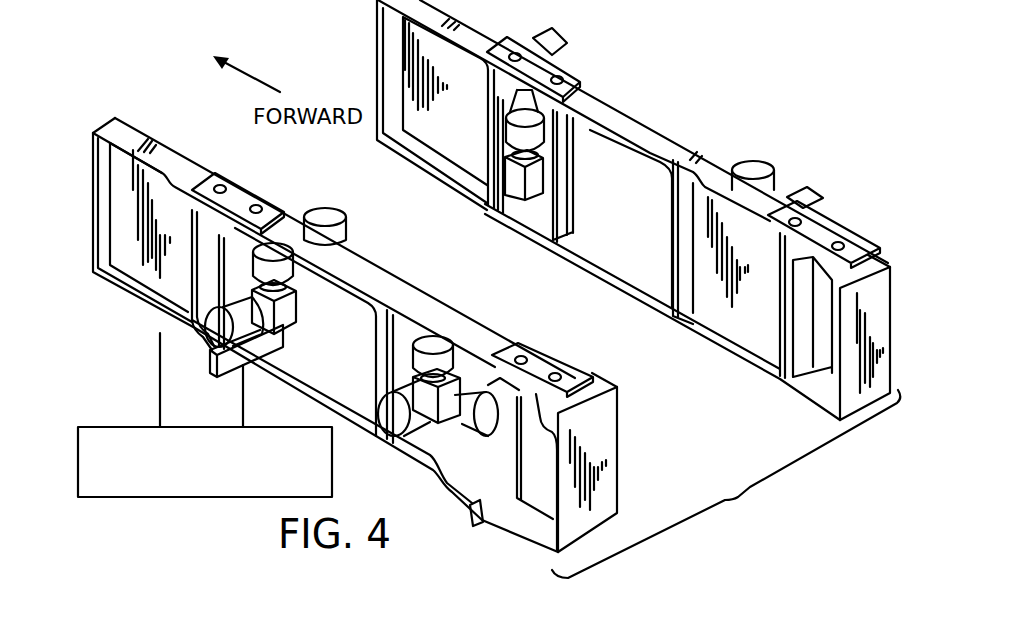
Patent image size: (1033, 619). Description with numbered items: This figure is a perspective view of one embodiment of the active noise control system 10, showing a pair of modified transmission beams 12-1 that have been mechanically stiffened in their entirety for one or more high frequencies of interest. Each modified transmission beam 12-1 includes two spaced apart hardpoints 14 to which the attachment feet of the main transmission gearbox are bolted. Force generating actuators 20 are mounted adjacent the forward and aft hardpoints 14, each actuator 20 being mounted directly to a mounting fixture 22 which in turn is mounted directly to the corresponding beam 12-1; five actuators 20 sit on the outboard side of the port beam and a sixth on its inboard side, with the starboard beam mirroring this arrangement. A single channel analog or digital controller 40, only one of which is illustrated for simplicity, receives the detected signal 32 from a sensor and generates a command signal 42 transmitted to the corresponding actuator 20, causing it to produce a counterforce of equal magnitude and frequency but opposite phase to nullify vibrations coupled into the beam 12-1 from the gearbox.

The active noise control (ANC) system 10 is at (140, 84).
The modified transmission beam 12-1 is at (392, 284).
The hardpoint 14 is at (245, 196).
The force generating actuator 20 is at (281, 247).
The mounting fixture 22 is at (292, 308).
The detected signal 32 is at (245, 401).
The single channel controller 40 is at (115, 427).
The command signal 42 is at (158, 367).